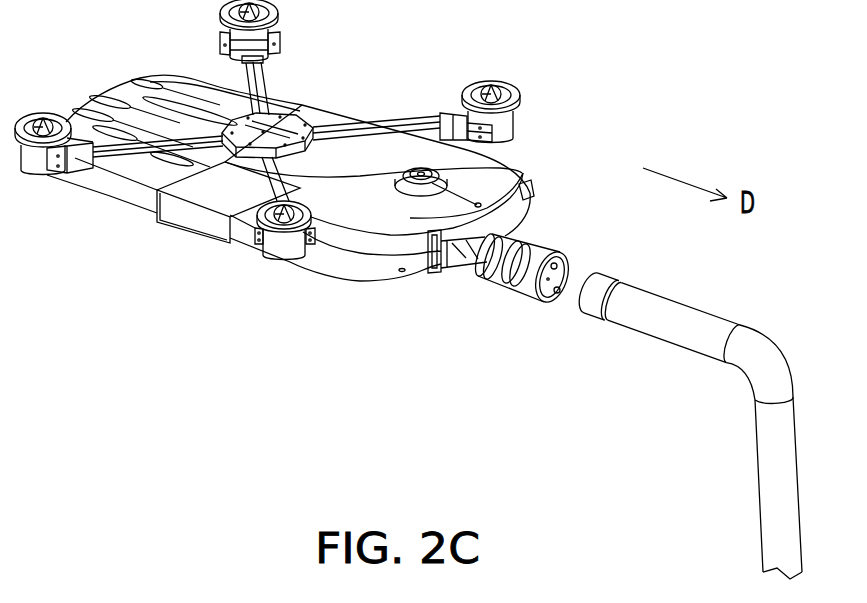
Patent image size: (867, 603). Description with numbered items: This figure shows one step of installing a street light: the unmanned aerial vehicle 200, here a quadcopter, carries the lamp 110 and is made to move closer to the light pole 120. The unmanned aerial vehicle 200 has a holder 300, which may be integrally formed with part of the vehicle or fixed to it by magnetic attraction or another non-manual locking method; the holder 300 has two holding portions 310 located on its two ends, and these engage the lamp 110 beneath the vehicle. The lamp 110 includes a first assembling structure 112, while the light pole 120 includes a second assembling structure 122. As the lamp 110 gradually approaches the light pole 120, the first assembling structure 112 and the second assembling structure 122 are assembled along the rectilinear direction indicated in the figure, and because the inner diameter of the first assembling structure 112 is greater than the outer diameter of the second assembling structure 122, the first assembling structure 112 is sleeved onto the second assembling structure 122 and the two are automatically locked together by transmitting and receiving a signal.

The lamp 110 is at (123, 180).
The first assembling structure 112 is at (527, 250).
The light pole 120 is at (763, 365).
The second assembling structure 122 is at (597, 305).
The unmanned aerial vehicle 200 is at (290, 114).
The holder 300 is at (222, 200).
The holding portion 310 is at (182, 218).